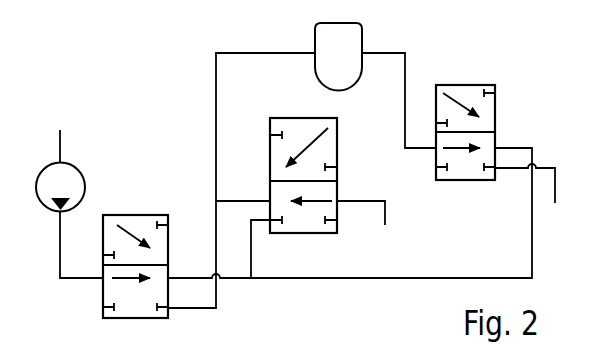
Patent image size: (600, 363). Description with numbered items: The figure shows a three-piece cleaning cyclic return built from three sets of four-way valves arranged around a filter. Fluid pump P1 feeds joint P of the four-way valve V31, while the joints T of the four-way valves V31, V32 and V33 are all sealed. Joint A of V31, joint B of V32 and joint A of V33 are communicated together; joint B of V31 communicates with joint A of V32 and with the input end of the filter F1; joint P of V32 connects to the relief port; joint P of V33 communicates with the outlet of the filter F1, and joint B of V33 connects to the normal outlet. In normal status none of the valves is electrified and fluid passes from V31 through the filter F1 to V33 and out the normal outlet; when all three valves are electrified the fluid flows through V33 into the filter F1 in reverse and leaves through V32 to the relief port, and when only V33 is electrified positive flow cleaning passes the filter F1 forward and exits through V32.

The four-way valve V31 is at (134, 253).
The four-way valve V32 is at (303, 162).
The four-way valve V33 is at (465, 120).
The fluid pump P1 is at (60, 187).
The filter F1 is at (338, 57).